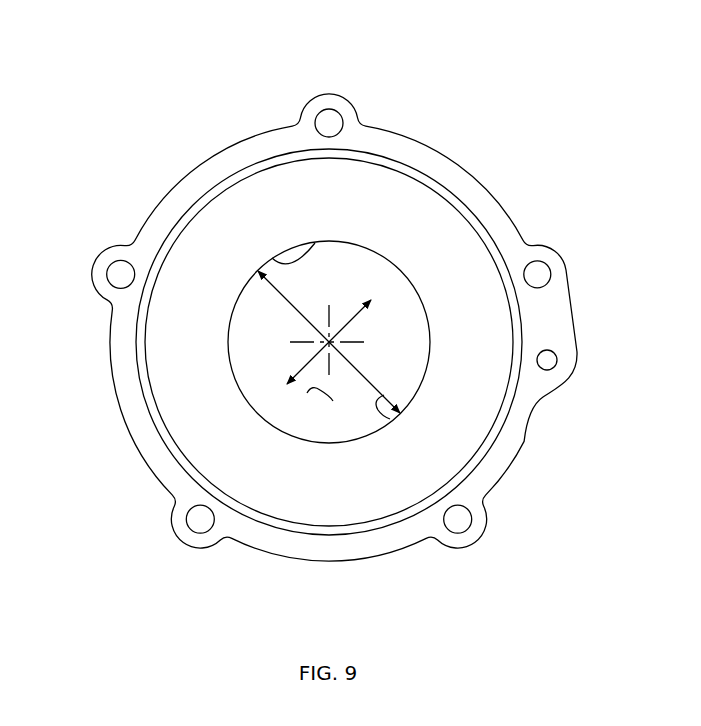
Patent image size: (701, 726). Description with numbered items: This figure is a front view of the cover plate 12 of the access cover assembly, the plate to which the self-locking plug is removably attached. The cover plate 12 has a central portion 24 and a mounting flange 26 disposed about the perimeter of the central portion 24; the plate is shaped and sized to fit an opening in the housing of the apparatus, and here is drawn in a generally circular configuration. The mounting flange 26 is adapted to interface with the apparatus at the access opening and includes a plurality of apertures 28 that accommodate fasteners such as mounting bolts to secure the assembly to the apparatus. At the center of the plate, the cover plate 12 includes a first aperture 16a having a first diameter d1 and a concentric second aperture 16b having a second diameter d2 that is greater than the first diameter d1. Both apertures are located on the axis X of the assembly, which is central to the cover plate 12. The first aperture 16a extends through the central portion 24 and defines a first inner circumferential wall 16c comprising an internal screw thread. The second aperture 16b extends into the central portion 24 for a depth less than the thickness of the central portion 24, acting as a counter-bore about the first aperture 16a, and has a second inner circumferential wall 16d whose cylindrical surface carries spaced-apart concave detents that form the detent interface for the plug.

The cover plate 12 is at (170, 186).
The central portion 24 is at (187, 283).
The mounting flange 26 is at (467, 192).
The apertures 28 is at (543, 270).
The first aperture 16a is at (312, 393).
The second aperture 16b is at (275, 258).
The first inner circumferential wall 16c is at (236, 364).
The second inner circumferential wall 16d is at (388, 418).
The axis X is at (340, 347).
The first diameter d1 is at (342, 331).
The second diameter d2 is at (313, 327).